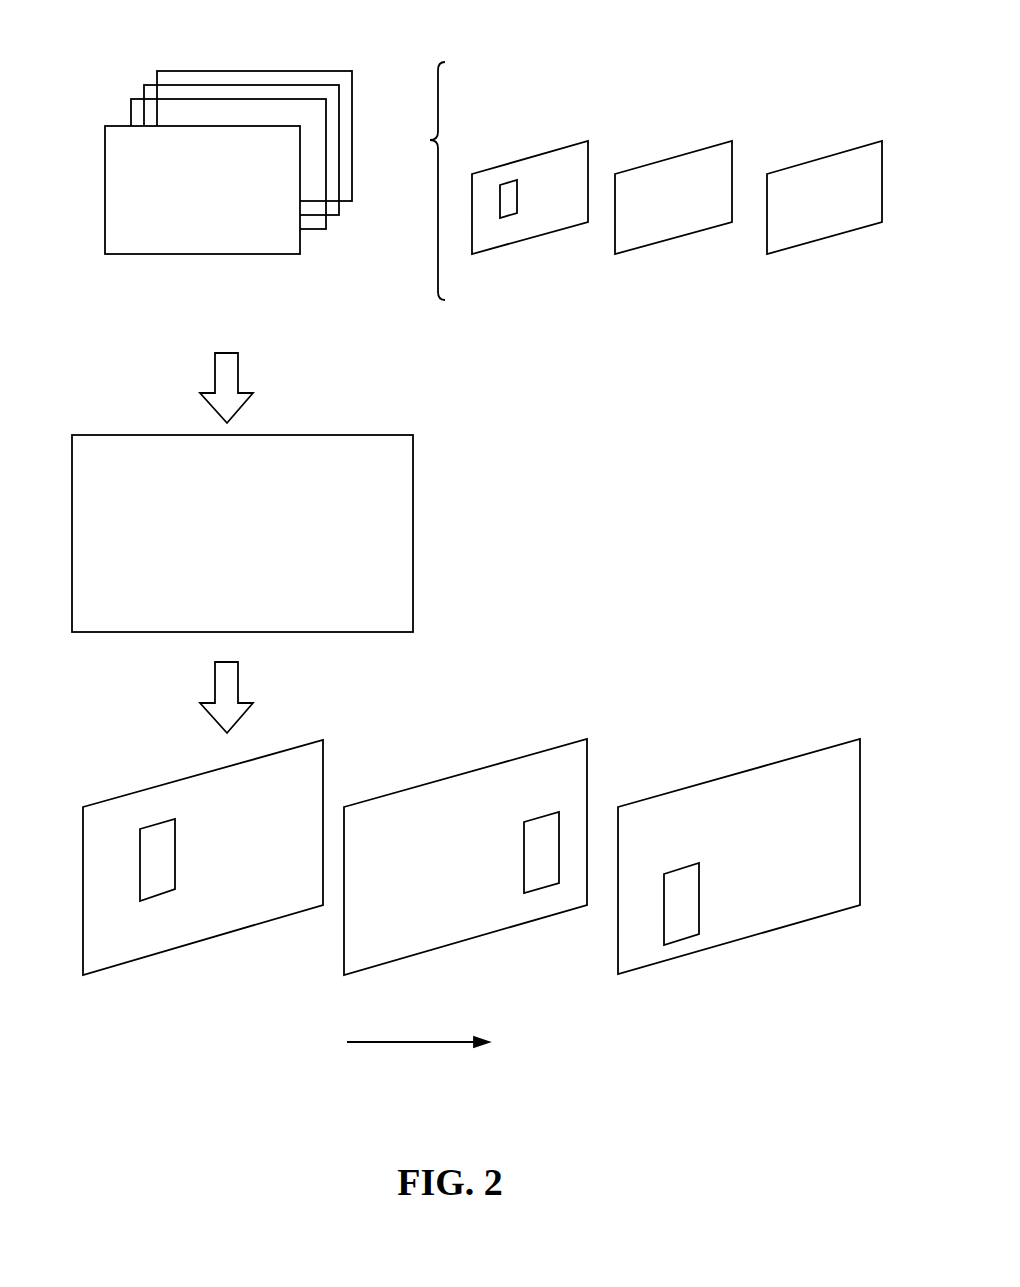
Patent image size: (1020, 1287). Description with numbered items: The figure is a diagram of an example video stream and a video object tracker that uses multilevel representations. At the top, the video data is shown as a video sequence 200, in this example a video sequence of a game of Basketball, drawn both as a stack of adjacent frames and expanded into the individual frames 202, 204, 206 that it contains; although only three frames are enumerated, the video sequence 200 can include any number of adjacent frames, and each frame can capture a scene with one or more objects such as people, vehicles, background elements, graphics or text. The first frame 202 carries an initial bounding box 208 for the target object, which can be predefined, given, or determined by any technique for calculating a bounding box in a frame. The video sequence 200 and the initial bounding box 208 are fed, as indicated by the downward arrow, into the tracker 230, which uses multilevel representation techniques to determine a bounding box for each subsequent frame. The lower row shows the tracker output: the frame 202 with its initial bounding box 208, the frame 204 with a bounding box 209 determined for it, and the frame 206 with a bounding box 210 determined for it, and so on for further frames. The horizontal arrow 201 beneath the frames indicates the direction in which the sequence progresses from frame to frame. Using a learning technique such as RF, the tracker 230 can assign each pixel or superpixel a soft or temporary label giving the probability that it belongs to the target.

The video sequence 200 is at (142, 49).
The time direction 201 is at (403, 1043).
The frame 202 is at (197, 256).
The frame 204 is at (305, 242).
The frame 206 is at (328, 222).
The initial bounding box 208 is at (518, 195).
The bounding box 209 is at (522, 860).
The bounding box 210 is at (700, 898).
The tracker 230 is at (212, 551).